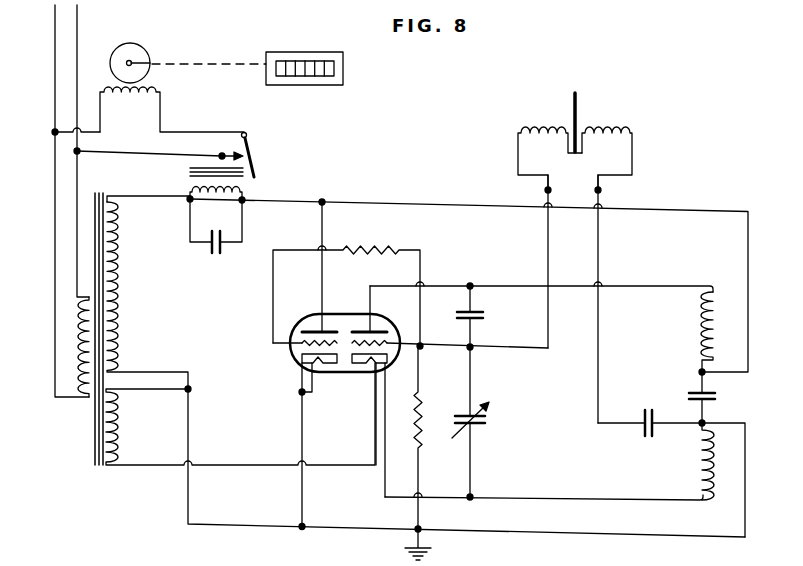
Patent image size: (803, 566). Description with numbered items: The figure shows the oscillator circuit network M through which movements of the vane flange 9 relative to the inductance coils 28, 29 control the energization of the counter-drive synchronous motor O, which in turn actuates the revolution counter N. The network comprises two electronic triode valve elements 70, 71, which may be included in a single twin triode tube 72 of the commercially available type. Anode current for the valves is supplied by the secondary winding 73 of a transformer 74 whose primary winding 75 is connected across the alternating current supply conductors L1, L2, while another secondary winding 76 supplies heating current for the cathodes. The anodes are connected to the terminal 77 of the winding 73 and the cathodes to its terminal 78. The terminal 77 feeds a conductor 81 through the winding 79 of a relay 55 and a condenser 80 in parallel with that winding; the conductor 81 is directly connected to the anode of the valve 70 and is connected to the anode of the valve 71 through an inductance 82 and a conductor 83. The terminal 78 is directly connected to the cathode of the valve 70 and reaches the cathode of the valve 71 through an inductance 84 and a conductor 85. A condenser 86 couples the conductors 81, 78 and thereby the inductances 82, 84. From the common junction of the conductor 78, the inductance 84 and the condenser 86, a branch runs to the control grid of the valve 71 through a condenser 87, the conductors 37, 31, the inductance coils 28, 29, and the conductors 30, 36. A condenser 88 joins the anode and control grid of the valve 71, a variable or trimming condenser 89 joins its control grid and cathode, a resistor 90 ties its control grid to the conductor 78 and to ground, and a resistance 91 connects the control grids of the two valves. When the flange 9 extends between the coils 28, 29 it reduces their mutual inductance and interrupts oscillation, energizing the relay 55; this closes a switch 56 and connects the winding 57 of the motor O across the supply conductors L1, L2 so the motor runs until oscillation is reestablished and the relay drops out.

The alternating current supply conductor L1 is at (55, 17).
The alternating current supply conductor L2 is at (77, 17).
The synchronous motor O is at (154, 50).
The revolution counter N is at (300, 52).
The circuit network M is at (440, 193).
The vane flange 9 is at (578, 101).
The inductance coil 28 is at (550, 141).
The inductance coil 29 is at (615, 143).
The terminal conductor 30 is at (518, 154).
The terminal conductor 31 is at (632, 156).
The conductor 36 is at (548, 316).
The conductor 37 is at (598, 316).
The relay 55 is at (247, 177).
The switch 56 is at (258, 151).
The winding 57 is at (142, 101).
The triode valve element 70 is at (308, 324).
The triode valve element 71 is at (380, 327).
The twin triode tube 72 is at (291, 359).
The secondary winding 73 is at (119, 280).
The transformer 74 is at (97, 468).
The primary winding 75 is at (84, 343).
The secondary winding 76 is at (118, 433).
The terminal 77 is at (143, 196).
The terminal 78 is at (188, 496).
The winding 79 is at (226, 196).
The condenser 80 is at (215, 254).
The conductor 81 is at (385, 202).
The inductance 82 is at (703, 330).
The conductor 83 is at (656, 286).
The inductance 84 is at (700, 461).
The conductor 85 is at (586, 487).
The condenser 86 is at (717, 400).
The condenser 87 is at (646, 409).
The condenser 88 is at (484, 318).
The trimming condenser 89 is at (490, 424).
The resistor 90 is at (422, 394).
The resistance 91 is at (374, 250).